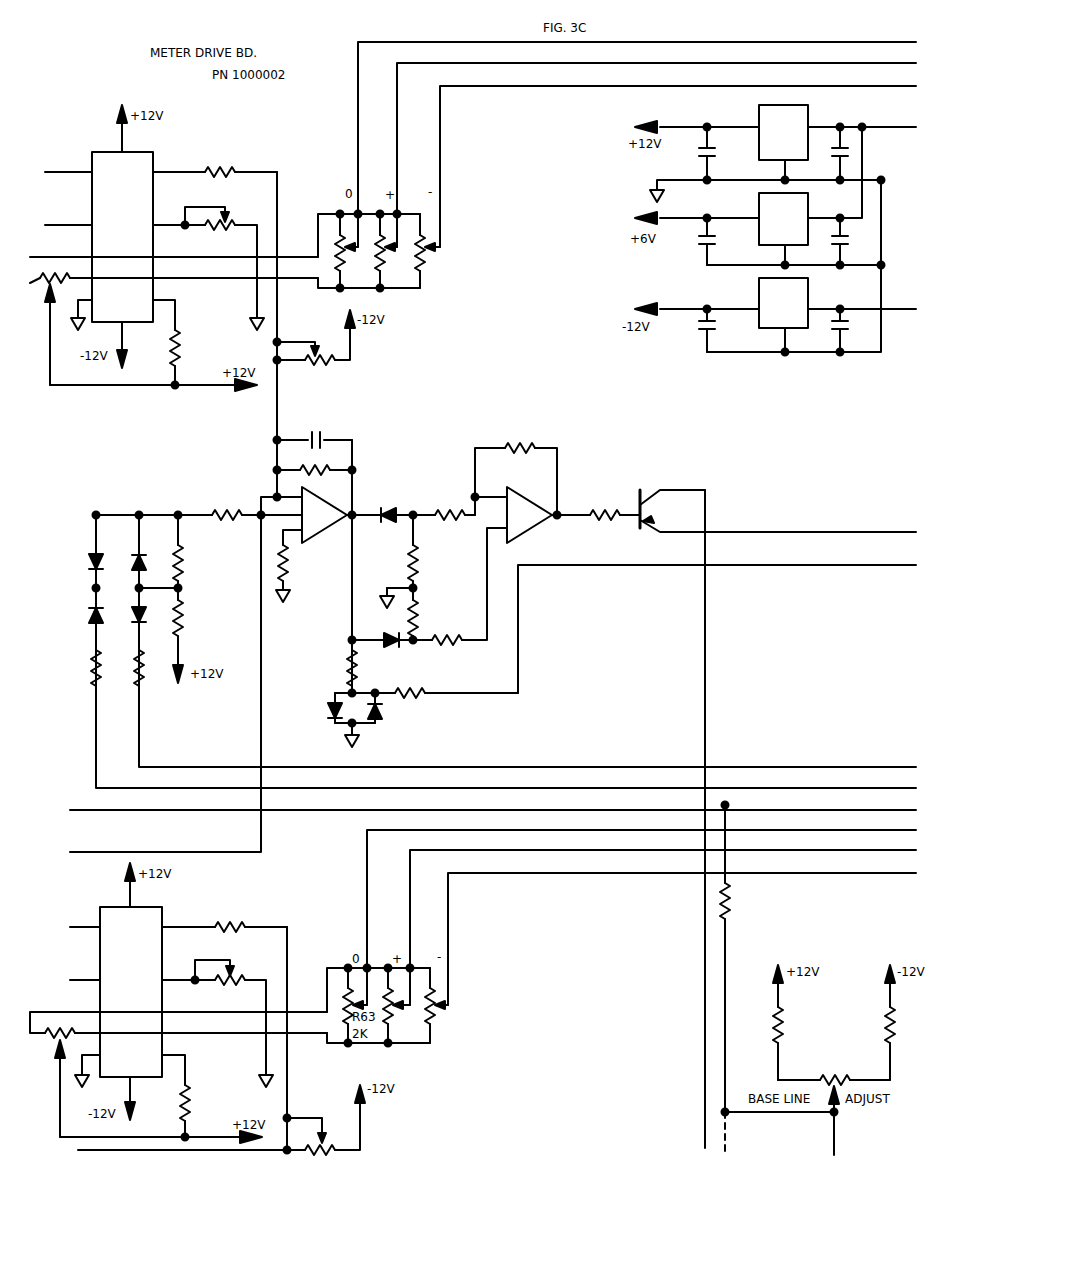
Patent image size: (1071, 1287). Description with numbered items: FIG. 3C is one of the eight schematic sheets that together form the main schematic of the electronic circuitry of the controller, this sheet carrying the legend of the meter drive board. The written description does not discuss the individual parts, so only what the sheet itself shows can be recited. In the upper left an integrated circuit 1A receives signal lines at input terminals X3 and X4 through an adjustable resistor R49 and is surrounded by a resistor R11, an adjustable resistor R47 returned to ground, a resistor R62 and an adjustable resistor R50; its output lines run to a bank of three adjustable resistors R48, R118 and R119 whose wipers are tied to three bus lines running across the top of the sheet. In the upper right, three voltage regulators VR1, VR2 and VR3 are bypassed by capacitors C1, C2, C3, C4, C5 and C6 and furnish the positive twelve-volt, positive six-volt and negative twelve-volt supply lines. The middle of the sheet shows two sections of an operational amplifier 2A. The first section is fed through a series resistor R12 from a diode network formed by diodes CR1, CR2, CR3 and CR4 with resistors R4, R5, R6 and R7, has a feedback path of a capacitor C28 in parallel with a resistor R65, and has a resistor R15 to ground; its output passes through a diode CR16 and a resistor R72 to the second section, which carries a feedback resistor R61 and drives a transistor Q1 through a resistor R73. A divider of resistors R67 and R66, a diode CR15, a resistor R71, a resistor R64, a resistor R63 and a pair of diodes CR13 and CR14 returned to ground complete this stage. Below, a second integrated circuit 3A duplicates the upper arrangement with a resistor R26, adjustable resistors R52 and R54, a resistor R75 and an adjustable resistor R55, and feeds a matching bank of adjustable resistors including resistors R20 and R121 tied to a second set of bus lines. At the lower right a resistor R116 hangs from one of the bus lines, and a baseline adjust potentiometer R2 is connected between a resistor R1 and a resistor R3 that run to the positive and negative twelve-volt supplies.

The analog switch IC 1A is at (122, 237).
The analog switch IC 3A is at (131, 992).
The operational amplifier 2A is at (427, 515).
The resistor 10K R11 is at (215, 164).
The potentiometer 2K R47 is at (208, 268).
The potentiometer 2K R49 is at (179, 321).
The resistor 620K R62 is at (153, 345).
The potentiometer 50K R50 is at (315, 349).
The potentiometer 2K R48 is at (352, 251).
The potentiometer 2K R118 is at (396, 251).
The potentiometer 2K R119 is at (438, 251).
The input X3 is at (169, 249).
The input X4 is at (28, 287).
The voltage regulator 7806 VR1 is at (783, 219).
The voltage regulator 7812 VR2 is at (783, 132).
The voltage regulator 7912 VR3 is at (783, 303).
The capacitor 1 C1 is at (831, 153).
The capacitor 47 C2 is at (719, 153).
The capacitor 1 C3 is at (831, 241).
The capacitor 47 C4 is at (719, 241).
The capacitor 47 C5 is at (719, 330).
The capacitor 1 C6 is at (831, 330).
The capacitor 1 C28 is at (314, 432).
The resistor 200K R65 is at (316, 468).
The resistor 20K R12 is at (199, 514).
The resistor 5.1K R15 is at (297, 566).
The diode CR1 is at (149, 606).
The diode CR2 is at (149, 553).
The diode CR3 is at (107, 606).
The diode CR4 is at (107, 553).
The resistor 750 R4 is at (191, 557).
The resistor 30K R5 is at (191, 640).
The resistor 5.1K R6 is at (146, 669).
The resistor 5.1K R7 is at (102, 668).
The diode CR16 is at (390, 506).
The resistor 10K R72 is at (444, 513).
The resistor 1M R61 is at (516, 473).
The resistor 4.7K R73 is at (596, 514).
The transistor Q1 is at (778, 511).
The resistor 1.5K R67 is at (429, 557).
The resistor 1.5K R66 is at (431, 618).
The resistor 10K R71 is at (441, 648).
The diode CR15 is at (374, 632).
The resistor 62K R64 is at (366, 672).
The resistor 5.1K R63 is at (426, 691).
The diode CR13 is at (317, 709).
The diode CR14 is at (391, 709).
The resistor 5.1K R116 is at (743, 959).
The resistor 3.9K R1 is at (795, 1022).
The baseline adjust potentiometer 20K R2 is at (834, 1084).
The resistor 3.9K R3 is at (908, 1022).
The resistor 10K R26 is at (224, 928).
The potentiometer 2K R52 is at (217, 1022).
The potentiometer 2K R54 is at (186, 1074).
The resistor 620K R75 is at (161, 1099).
The potentiometer 50K R55 is at (221, 1120).
The potentiometer 2K R20 is at (400, 1006).
The potentiometer 2K R121 is at (448, 1005).